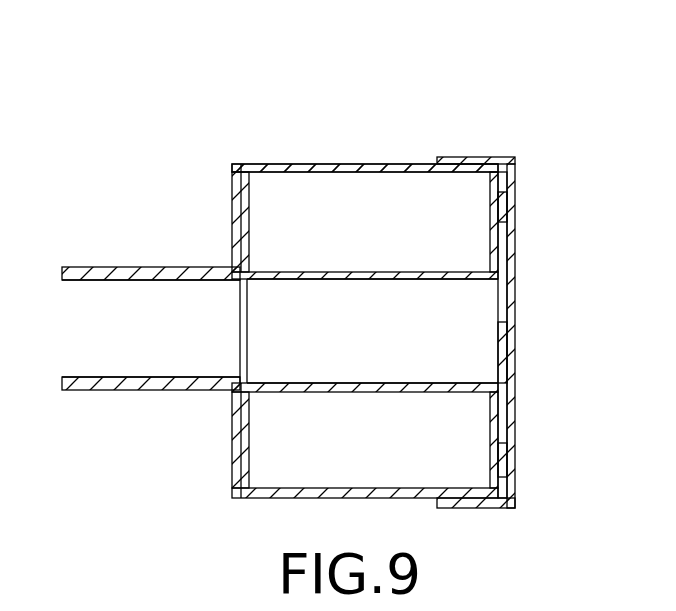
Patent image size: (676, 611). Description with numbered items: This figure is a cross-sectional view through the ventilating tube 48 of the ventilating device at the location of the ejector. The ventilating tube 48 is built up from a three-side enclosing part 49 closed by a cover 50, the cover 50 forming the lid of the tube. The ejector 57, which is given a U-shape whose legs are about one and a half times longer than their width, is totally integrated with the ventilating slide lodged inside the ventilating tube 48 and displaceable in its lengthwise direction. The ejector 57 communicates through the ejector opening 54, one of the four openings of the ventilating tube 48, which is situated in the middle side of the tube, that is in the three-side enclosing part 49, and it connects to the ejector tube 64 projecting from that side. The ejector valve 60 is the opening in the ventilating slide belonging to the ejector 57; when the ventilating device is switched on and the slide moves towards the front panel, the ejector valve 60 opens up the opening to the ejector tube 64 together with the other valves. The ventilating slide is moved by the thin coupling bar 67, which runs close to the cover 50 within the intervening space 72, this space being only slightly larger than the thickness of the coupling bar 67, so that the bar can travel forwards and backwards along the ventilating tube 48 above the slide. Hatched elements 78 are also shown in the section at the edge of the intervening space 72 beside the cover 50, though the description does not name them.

The ventilating tube 48 is at (480, 74).
The three-side enclosing part 49 is at (383, 164).
The cover 50 is at (464, 157).
The ejector opening 54 is at (233, 330).
The ejector 57 is at (395, 320).
The ejector valve 60 is at (245, 347).
The ejector tube 64 is at (212, 268).
The coupling bar 67 is at (503, 354).
The intervening space 72 is at (505, 258).
The seal 78 is at (503, 207).